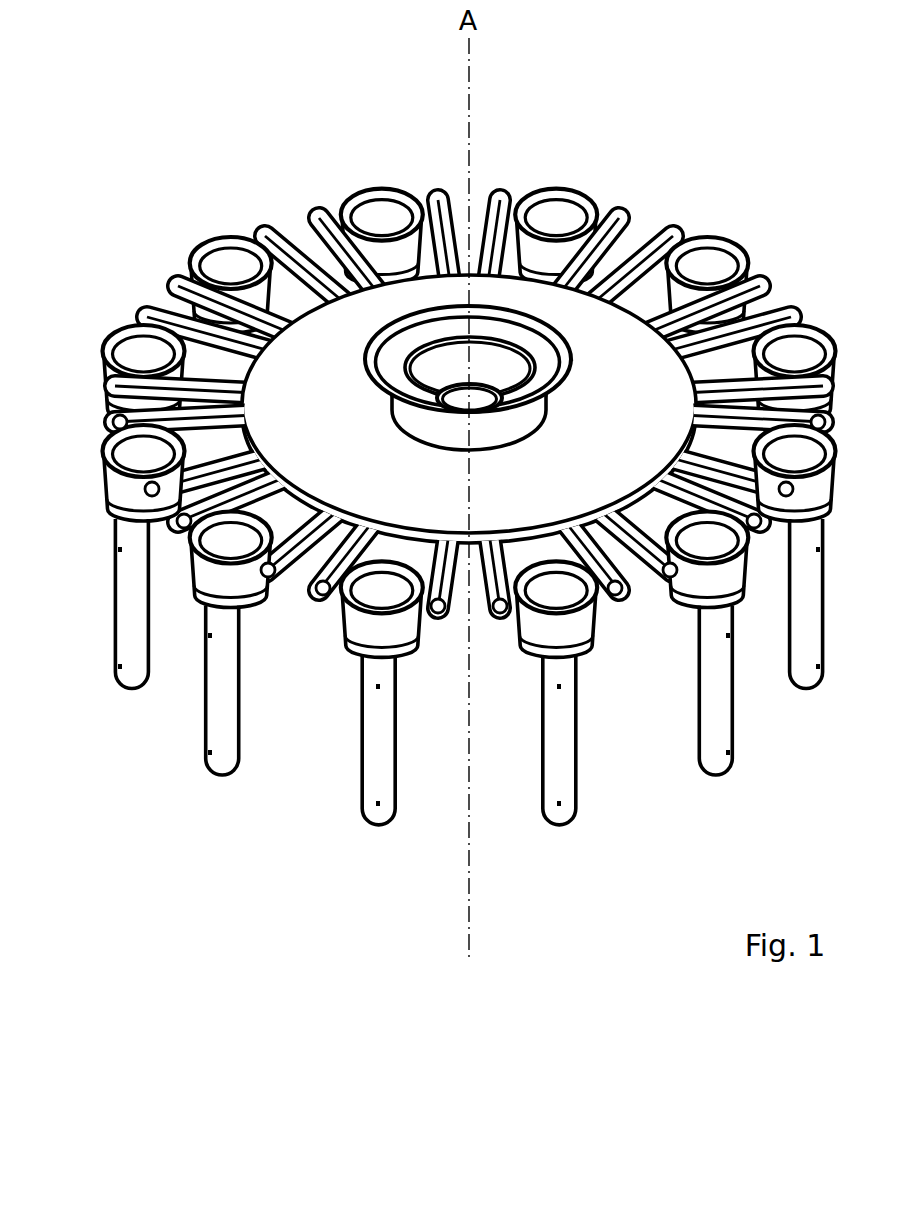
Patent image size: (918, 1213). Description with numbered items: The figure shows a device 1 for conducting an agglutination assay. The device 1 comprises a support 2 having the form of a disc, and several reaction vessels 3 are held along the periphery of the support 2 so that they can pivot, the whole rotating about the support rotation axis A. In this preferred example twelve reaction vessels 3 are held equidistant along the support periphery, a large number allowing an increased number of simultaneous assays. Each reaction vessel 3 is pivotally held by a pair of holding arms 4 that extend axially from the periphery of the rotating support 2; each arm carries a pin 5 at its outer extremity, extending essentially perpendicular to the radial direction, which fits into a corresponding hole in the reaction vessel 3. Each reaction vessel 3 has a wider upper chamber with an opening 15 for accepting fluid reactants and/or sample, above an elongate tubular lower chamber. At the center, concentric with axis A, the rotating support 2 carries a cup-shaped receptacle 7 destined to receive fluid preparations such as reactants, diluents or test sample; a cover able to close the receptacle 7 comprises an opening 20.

The device 1 is at (438, 521).
The support 2 is at (563, 312).
The reaction vessel 3 is at (193, 733).
The holding arm 4 is at (434, 534).
The pin 5 is at (425, 607).
The cup-shaped receptacle 7 is at (577, 363).
The opening 15 is at (381, 215).
The opening 20 is at (476, 400).